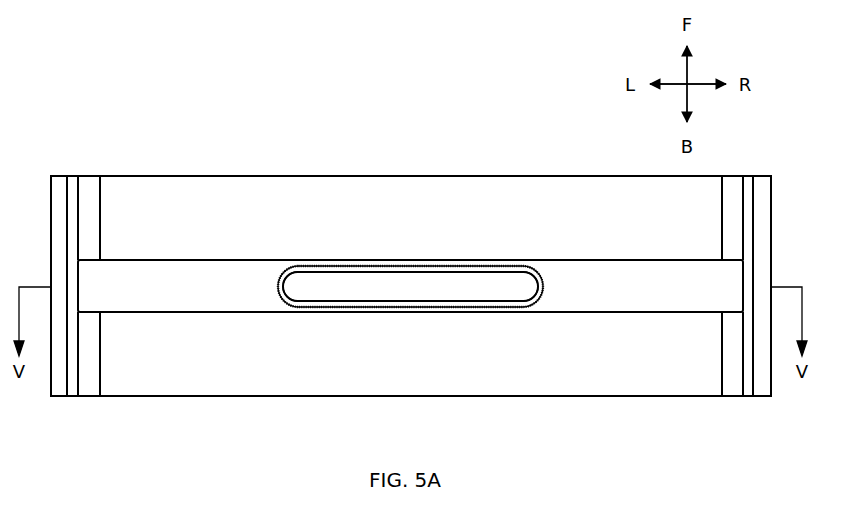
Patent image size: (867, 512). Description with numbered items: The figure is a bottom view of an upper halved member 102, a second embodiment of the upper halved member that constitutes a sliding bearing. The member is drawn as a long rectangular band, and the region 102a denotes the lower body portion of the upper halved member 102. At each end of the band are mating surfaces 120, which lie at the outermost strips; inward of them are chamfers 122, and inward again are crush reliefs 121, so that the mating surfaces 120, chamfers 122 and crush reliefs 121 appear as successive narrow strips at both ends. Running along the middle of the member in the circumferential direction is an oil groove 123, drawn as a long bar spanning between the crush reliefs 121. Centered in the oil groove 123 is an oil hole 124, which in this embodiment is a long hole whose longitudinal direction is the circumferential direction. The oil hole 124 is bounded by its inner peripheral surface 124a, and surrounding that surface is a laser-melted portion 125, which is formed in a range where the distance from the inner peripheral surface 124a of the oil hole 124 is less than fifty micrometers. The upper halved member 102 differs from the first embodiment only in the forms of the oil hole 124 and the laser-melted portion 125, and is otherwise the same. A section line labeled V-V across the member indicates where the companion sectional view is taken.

The upper halved member 102 is at (186, 164).
The lower housing panel 102a is at (542, 357).
The mating surfaces 120 is at (57, 383).
The crush reliefs 121 is at (88, 345).
The chamfers 122 is at (71, 368).
The oil groove 123 is at (229, 305).
The oil hole 124 is at (371, 283).
The inner peripheral surface 124a is at (407, 304).
The laser-melted portion 125 is at (340, 304).